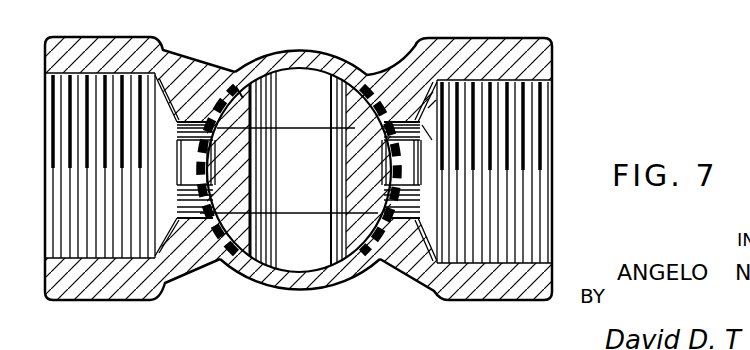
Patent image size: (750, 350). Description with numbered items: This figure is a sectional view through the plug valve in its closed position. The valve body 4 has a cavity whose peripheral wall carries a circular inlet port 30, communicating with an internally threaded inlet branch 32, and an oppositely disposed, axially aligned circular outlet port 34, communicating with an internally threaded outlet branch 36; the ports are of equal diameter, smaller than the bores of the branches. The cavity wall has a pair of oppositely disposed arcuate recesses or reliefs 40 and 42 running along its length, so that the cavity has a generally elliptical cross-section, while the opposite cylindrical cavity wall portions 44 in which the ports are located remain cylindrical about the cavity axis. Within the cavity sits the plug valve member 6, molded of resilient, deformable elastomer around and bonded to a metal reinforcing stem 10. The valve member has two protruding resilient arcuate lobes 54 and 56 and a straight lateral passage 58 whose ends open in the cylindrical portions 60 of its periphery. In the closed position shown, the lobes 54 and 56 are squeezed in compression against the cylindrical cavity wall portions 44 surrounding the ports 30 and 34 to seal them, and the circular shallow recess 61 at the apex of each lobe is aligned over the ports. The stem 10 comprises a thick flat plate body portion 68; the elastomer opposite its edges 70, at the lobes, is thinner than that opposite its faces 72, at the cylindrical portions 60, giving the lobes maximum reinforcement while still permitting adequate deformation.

The valve body 4 is at (290, 52).
The plug valve member 6 is at (237, 86).
The metal reinforcing stem 10 is at (233, 243).
The inlet port 30 is at (193, 216).
The inlet branch 32 is at (100, 44).
The outlet port 34 is at (390, 194).
The outlet branch 36 is at (497, 43).
The arcuate recess 40 is at (320, 68).
The arcuate recess 42 is at (307, 290).
The cylindrical cavity wall portion 44 is at (388, 256).
The arcuate lobe 54 is at (395, 171).
The arcuate lobe 56 is at (212, 158).
The lateral passage 58 is at (333, 104).
The cylindrical portion 60 is at (262, 74).
The shallow recess 61 is at (392, 177).
The body portion 68 is at (216, 115).
The edge 70 is at (212, 167).
The face 72 is at (413, 57).